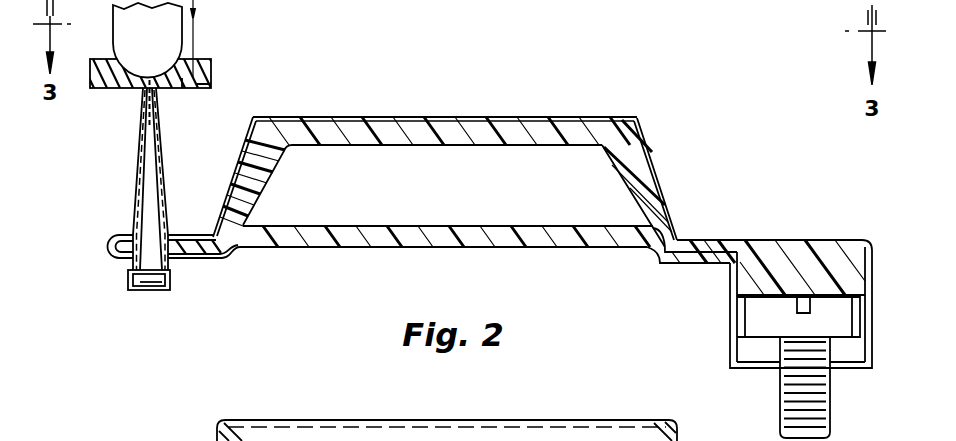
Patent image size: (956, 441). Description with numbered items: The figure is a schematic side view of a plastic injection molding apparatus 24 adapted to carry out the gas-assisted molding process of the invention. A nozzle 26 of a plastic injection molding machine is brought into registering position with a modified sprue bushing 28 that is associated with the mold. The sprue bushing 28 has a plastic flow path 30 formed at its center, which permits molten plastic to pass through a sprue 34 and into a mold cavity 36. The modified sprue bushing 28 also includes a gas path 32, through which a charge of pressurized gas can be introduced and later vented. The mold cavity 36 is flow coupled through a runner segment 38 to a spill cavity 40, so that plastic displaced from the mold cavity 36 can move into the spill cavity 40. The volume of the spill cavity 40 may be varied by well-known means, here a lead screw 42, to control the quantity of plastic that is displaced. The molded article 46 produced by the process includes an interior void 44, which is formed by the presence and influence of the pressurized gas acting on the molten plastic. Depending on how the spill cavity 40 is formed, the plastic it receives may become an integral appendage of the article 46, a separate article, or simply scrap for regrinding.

The plastic injection molding apparatus 24 is at (657, 80).
The nozzle 26 is at (183, 31).
The sprue bushing 28 is at (212, 71).
The plastic flow path 30 is at (156, 88).
The gas path 32 is at (196, 86).
The sprue 34 is at (165, 151).
The mold cavity 36 is at (459, 146).
The runner segment 38 is at (678, 247).
The spill cavity 40 is at (851, 269).
The lead screw 42 is at (832, 397).
The interior void 44 is at (558, 150).
The molded article 46 is at (507, 124).